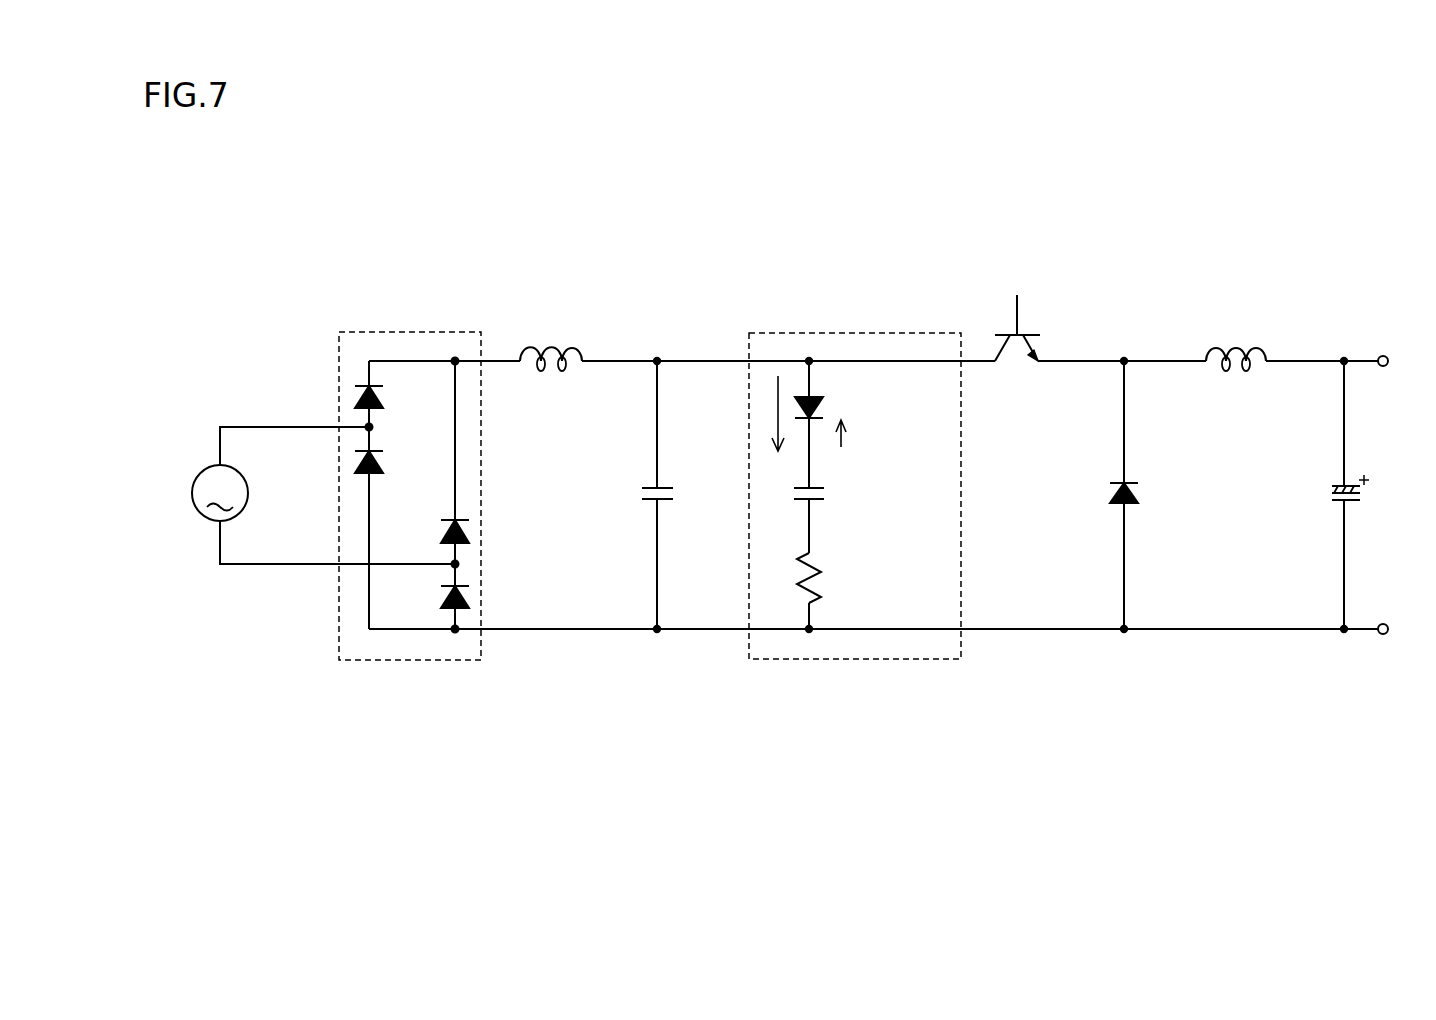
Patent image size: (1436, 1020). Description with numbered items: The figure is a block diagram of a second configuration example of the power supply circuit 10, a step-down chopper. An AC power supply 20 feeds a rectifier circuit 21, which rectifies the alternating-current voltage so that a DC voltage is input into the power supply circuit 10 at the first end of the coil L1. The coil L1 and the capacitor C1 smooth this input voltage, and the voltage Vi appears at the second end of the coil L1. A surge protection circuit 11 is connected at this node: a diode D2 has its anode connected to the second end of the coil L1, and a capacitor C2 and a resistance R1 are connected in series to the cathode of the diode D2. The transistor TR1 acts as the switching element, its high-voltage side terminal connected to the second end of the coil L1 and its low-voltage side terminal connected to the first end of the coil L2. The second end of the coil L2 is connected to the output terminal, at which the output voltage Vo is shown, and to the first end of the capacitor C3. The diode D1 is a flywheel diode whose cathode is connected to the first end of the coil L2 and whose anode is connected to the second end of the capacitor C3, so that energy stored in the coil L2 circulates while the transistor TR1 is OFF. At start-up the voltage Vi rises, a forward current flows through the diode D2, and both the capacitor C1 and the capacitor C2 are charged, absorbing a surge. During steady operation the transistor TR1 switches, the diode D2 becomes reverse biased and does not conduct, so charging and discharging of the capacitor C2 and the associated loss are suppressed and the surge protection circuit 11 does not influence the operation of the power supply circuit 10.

The power supply circuit 10 is at (1350, 282).
The AC power supply 20 is at (201, 467).
The rectifier circuit 21 is at (409, 332).
The surge protection circuit 11 is at (840, 333).
The coil L1 is at (553, 346).
The capacitor C1 is at (672, 486).
The diode D2 is at (820, 400).
The capacitor C2 is at (820, 487).
The resistance R1 is at (820, 572).
The transistor TR1 is at (1030, 331).
The diode D1 is at (1128, 480).
The coil L2 is at (1236, 346).
The capacitor C3 is at (1356, 500).
The voltage Vi is at (652, 350).
The output voltage terminal Vo is at (1399, 492).